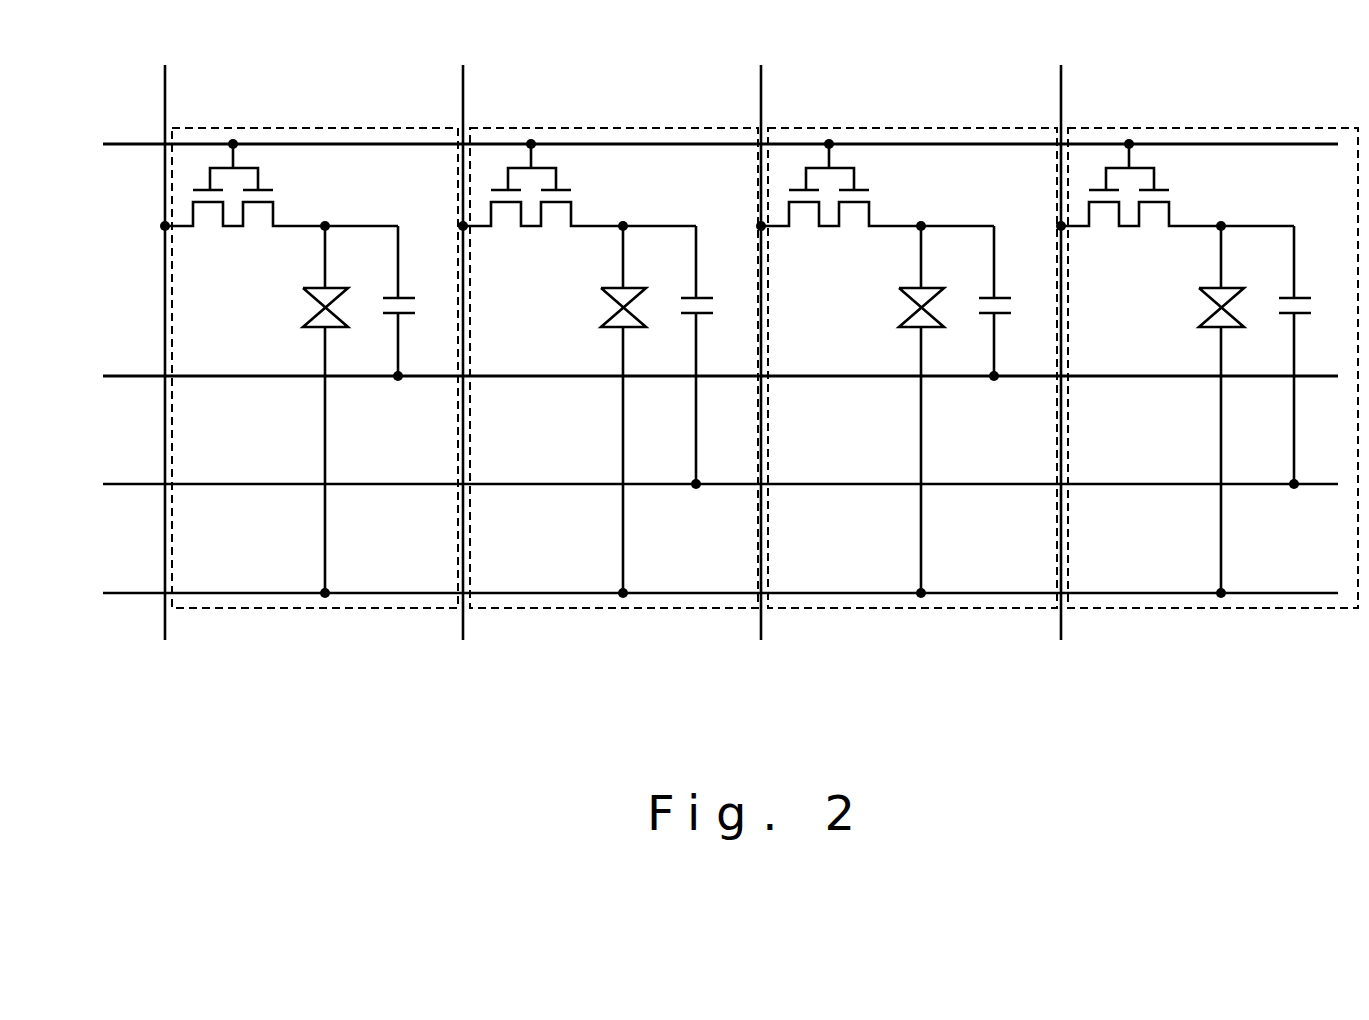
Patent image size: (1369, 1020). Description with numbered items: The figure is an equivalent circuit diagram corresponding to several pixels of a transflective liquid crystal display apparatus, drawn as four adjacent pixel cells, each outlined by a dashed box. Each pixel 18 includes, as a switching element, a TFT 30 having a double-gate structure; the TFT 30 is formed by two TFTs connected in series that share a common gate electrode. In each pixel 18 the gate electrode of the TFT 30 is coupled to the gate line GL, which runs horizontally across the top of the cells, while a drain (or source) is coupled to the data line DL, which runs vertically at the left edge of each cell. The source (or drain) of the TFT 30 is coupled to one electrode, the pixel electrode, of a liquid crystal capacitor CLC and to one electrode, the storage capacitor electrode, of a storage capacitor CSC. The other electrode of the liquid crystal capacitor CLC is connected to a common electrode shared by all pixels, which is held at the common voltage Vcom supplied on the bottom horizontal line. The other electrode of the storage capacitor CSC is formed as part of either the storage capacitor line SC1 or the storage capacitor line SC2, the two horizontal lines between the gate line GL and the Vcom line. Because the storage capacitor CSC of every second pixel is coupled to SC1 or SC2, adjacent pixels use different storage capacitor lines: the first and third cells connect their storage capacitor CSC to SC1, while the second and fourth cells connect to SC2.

The pixel 18 is at (309, 339).
The TFT 30 is at (235, 237).
The gate line GL is at (130, 144).
The data line DL is at (467, 82).
The storage capacitor line SC1 is at (130, 376).
The storage capacitor line SC2 is at (130, 484).
The common voltage signal Vcom is at (130, 593).
The liquid crystal capacitor CLC is at (303, 312).
The storage capacitor CSC is at (314, 328).